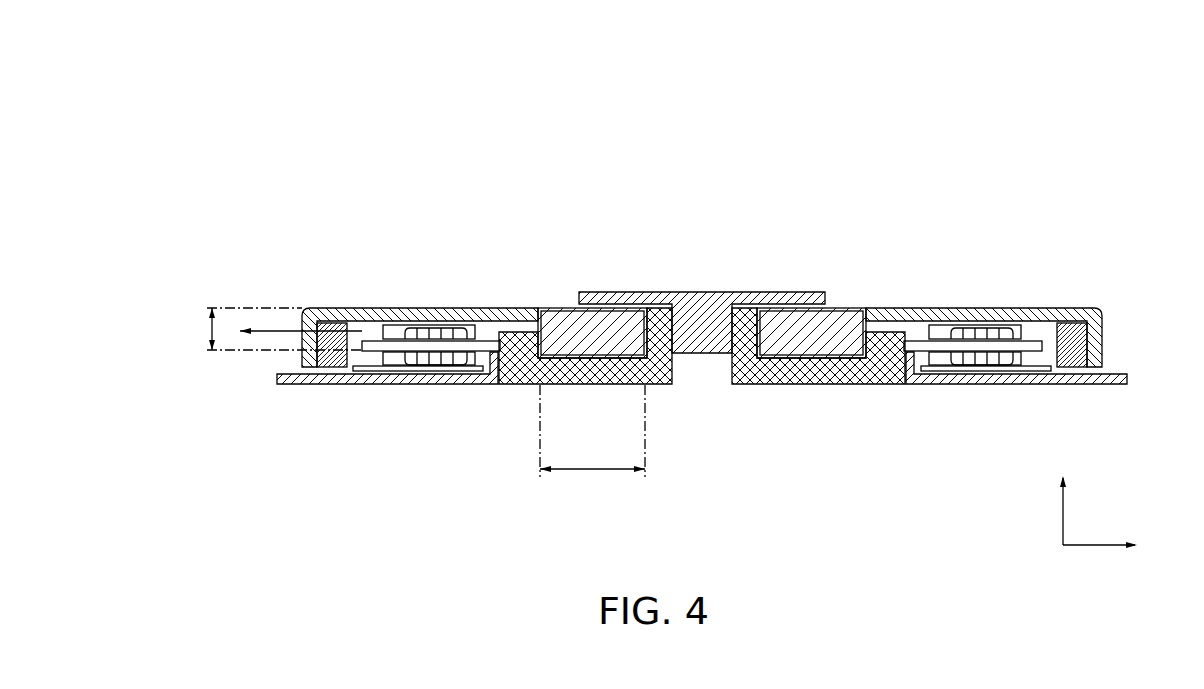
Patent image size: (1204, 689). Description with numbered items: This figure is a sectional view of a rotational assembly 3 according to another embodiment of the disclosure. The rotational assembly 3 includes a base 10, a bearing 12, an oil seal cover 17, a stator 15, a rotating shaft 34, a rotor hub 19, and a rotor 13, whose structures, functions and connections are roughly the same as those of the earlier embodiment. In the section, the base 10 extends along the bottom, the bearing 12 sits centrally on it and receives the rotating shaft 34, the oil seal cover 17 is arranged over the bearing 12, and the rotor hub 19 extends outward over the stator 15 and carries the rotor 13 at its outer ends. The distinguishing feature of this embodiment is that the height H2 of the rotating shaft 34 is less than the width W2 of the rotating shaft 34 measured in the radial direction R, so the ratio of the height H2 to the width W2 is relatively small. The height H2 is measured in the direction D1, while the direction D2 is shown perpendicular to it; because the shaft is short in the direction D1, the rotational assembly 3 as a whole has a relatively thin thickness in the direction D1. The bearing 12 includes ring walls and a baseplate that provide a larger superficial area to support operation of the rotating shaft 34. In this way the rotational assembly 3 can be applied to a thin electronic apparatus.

The rotational assembly 3 is at (260, 50).
The base 10 is at (458, 385).
The bearing 12 is at (618, 401).
The rotor 13 is at (335, 328).
The stator 15 is at (418, 328).
The oil seal cover 17 is at (702, 310).
The rotor hub 19 is at (470, 313).
The rotating shaft 34 is at (561, 320).
The height of the rotating shaft H2 is at (206, 328).
The radial direction R is at (272, 330).
The width of the rotating shaft W2 is at (592, 431).
The first direction D1 is at (1065, 496).
The second direction D2 is at (1116, 545).